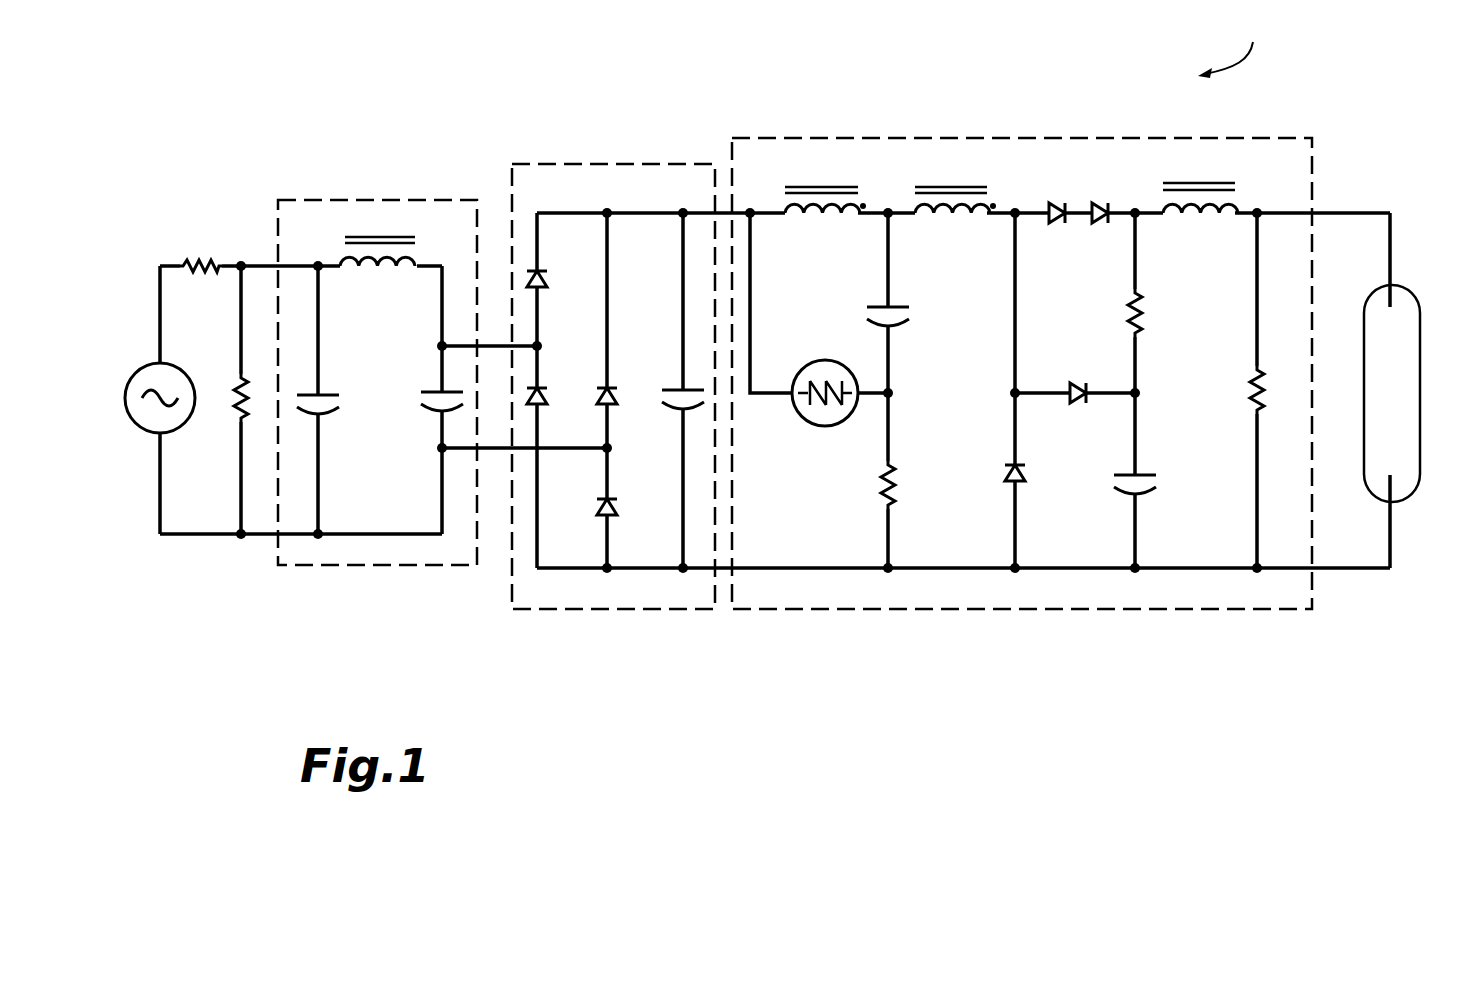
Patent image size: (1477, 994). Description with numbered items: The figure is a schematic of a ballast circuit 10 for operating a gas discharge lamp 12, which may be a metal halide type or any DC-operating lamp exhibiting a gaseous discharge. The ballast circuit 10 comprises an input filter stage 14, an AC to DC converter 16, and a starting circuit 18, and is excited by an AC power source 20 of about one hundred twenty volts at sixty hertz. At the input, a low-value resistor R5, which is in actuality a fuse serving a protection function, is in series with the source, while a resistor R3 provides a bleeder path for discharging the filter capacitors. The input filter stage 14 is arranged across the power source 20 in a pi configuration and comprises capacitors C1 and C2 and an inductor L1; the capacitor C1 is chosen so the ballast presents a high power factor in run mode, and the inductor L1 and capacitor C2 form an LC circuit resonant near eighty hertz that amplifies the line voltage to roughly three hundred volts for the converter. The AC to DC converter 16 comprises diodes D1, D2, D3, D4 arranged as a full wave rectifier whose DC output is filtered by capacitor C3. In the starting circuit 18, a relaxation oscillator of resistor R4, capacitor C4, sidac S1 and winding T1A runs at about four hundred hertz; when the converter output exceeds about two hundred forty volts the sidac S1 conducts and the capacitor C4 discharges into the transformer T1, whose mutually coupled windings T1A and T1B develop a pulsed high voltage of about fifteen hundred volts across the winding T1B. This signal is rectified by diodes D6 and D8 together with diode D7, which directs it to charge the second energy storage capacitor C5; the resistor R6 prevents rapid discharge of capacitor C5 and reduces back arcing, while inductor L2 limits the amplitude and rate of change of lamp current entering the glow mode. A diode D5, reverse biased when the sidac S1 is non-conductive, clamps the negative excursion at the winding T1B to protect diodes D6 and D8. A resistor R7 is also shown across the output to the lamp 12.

The ballast circuit 10 is at (1270, 37).
The gas discharge lamp 12 is at (1410, 305).
The input filter stage 14 is at (392, 198).
The AC to DC converter 16 is at (637, 163).
The starting circuit 18 is at (985, 138).
The AC power source 20 is at (150, 366).
The resistor R5 is at (203, 264).
The resistor R3 is at (238, 386).
The capacitor C1 is at (322, 400).
The inductor L1 is at (374, 268).
The capacitor C2 is at (425, 418).
The diode D1 is at (544, 279).
The diode D2 is at (544, 396).
The diode D3 is at (613, 396).
The diode D4 is at (613, 507).
The capacitor C3 is at (666, 400).
The winding T1A is at (801, 182).
The transformer T1 is at (892, 162).
The winding T1B is at (970, 186).
The sidac S1 is at (822, 360).
The capacitor C4 is at (900, 312).
The resistor R4 is at (895, 484).
The diode D6 is at (1053, 204).
The diode D8 is at (1100, 204).
The inductor L2 is at (1198, 218).
The resistor R6 is at (1146, 310).
The diode D7 is at (1075, 385).
The resistor R7 is at (1250, 385).
The diode D5 is at (1027, 473).
The capacitor C5 is at (1148, 481).